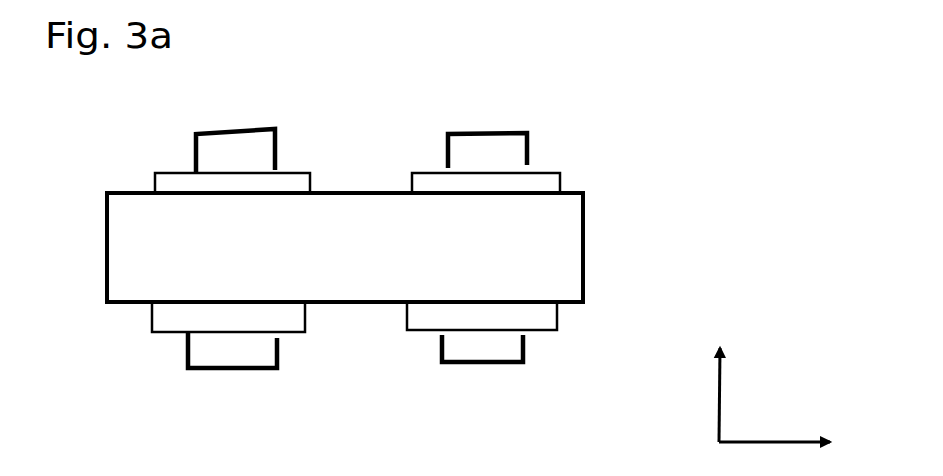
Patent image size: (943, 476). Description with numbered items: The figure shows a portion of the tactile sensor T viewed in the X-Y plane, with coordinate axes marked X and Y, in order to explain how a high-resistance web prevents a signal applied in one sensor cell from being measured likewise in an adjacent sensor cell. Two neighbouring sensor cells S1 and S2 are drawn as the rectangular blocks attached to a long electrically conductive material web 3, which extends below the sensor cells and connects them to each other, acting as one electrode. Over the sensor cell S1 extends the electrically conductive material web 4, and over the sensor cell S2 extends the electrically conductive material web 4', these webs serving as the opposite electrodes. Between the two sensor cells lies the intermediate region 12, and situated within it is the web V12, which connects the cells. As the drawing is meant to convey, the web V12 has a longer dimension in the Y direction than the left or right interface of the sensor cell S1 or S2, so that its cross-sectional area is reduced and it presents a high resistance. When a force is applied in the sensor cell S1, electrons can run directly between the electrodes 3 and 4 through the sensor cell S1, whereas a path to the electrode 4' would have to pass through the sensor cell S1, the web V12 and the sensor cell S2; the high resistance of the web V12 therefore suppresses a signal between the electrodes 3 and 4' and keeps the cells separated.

The tactile sensor T is at (623, 140).
The web V12 is at (358, 223).
The electrically conductive material web 3 is at (107, 233).
The intermediate region 12 is at (355, 306).
The electrically conductive material web 4 is at (232, 123).
The electrically conductive material web 4' is at (496, 115).
The sensor cell S1 is at (145, 312).
The sensor cell S2 is at (557, 313).
The X direction X is at (725, 370).
The Y direction Y is at (800, 441).